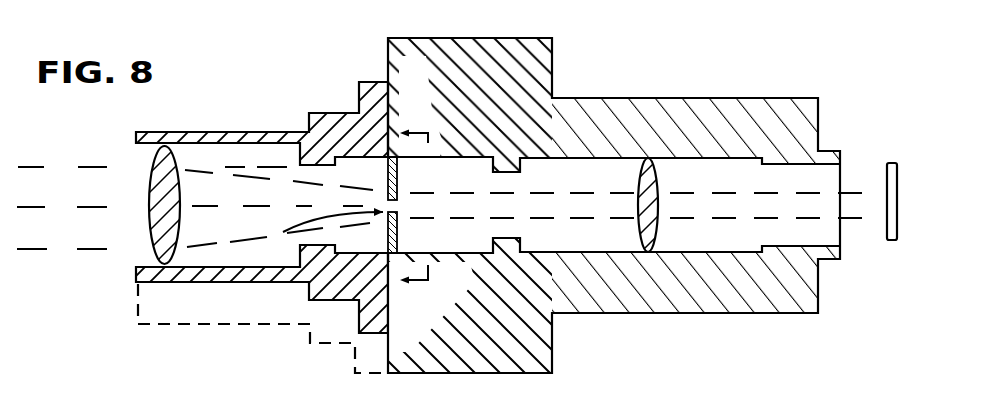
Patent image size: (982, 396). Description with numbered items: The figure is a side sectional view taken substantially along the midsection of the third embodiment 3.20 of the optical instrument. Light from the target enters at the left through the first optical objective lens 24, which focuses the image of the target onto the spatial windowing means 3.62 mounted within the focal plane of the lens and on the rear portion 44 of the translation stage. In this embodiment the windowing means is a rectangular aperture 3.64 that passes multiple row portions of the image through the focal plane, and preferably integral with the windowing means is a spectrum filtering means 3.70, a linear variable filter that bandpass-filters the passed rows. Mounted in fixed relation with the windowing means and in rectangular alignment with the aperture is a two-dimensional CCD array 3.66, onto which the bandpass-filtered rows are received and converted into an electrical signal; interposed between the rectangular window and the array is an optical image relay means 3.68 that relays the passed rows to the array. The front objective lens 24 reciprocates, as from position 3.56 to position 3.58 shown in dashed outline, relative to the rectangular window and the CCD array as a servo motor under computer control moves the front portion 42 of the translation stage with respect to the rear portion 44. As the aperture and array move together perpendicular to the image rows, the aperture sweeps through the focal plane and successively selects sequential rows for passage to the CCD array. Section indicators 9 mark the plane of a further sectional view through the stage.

The third embodiment 3.20 is at (645, 77).
The position 3.56 is at (200, 131).
The position 3.58 is at (193, 323).
The spatial windowing means 3.62 is at (398, 190).
The rectangular aperture 3.64 is at (304, 221).
The CCD array 3.66 is at (885, 225).
The optical image relay means 3.68 is at (655, 187).
The spectrum filtering means 3.70 is at (402, 223).
The first optical objective lens 24 is at (149, 222).
The front portion of the translation stage 42 is at (380, 82).
The rear portion of the translation stage 44 is at (393, 38).
The section line indicator 9 is at (414, 208).